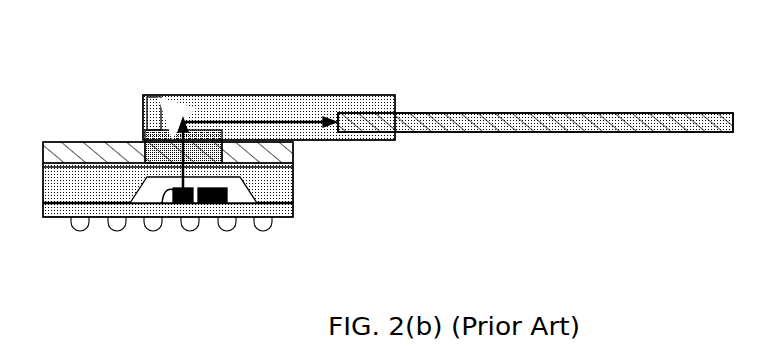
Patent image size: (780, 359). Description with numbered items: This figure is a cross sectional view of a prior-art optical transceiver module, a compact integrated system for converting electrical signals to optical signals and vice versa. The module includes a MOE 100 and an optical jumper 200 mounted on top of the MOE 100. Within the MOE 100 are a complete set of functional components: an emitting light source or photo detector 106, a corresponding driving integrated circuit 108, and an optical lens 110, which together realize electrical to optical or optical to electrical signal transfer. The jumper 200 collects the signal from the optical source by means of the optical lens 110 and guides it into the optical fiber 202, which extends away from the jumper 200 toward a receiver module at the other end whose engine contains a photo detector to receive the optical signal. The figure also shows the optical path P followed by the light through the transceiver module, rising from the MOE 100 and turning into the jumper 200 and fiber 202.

The MOE 100 is at (307, 172).
The emitting light source or photo detector 106 is at (165, 198).
The driving integrated circuit 108 is at (216, 213).
The optical lens 110 is at (172, 185).
The optical jumper 200 is at (275, 90).
The optical fiber 202 is at (548, 132).
The optical path P is at (172, 144).